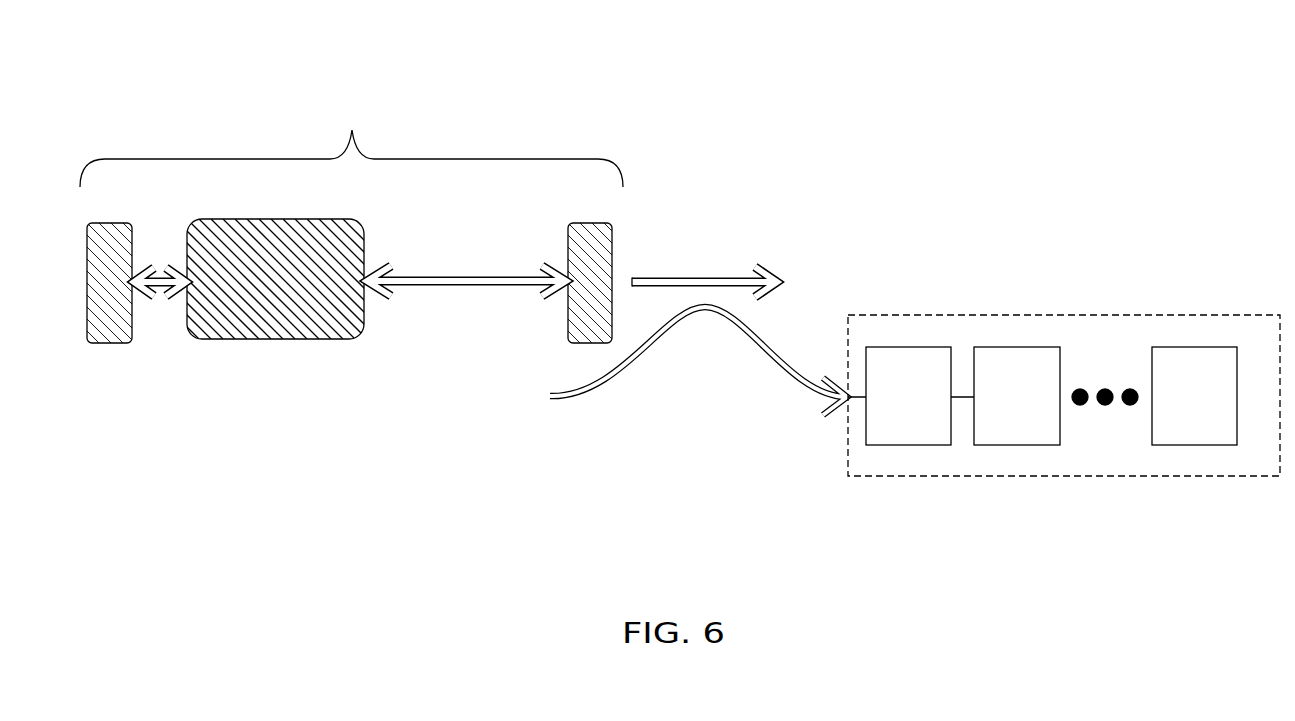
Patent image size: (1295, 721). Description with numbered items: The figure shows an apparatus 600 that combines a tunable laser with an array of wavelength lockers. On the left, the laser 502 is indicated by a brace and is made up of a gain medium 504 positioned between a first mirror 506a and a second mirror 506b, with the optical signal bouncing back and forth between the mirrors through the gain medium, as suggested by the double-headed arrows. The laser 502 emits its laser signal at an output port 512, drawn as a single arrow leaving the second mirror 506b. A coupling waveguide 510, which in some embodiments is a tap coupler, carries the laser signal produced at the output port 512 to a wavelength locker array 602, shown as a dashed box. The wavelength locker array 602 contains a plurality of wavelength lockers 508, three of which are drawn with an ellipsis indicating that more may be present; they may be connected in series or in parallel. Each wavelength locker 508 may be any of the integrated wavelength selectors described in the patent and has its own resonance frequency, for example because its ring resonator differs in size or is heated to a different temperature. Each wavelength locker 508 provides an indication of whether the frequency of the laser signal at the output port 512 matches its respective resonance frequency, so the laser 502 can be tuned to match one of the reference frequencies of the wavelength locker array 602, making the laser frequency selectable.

The apparatus 600 is at (163, 118).
The laser 502 is at (351, 124).
The gain medium 504 is at (283, 323).
The mirror 506a is at (110, 323).
The mirror 506b is at (578, 305).
The wavelength locker 508 is at (908, 445).
The coupling waveguide 510 is at (743, 343).
The output port 512 is at (677, 277).
The wavelength locker array 602 is at (1038, 477).